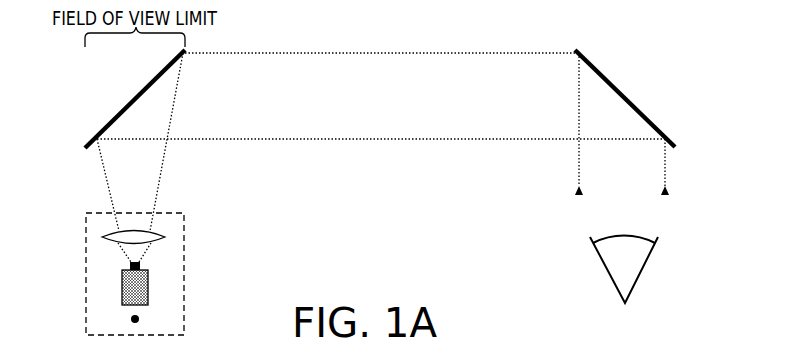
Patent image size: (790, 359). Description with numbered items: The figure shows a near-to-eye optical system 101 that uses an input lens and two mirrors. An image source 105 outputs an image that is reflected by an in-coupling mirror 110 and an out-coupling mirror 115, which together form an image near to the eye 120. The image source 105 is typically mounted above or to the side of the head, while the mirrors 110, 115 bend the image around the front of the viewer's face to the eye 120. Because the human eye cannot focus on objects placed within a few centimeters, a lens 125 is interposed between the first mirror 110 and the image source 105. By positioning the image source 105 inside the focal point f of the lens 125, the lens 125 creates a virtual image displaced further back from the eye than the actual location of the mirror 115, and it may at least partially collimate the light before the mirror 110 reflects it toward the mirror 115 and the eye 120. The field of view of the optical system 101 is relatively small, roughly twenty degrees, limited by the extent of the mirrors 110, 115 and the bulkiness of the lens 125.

The near-to-eye optical system 101 is at (386, 194).
The image source 105 is at (122, 285).
The in-coupling mirror 110 is at (102, 128).
The out-coupling mirror 115 is at (633, 102).
The eye 120 is at (637, 277).
The lens 125 is at (112, 235).